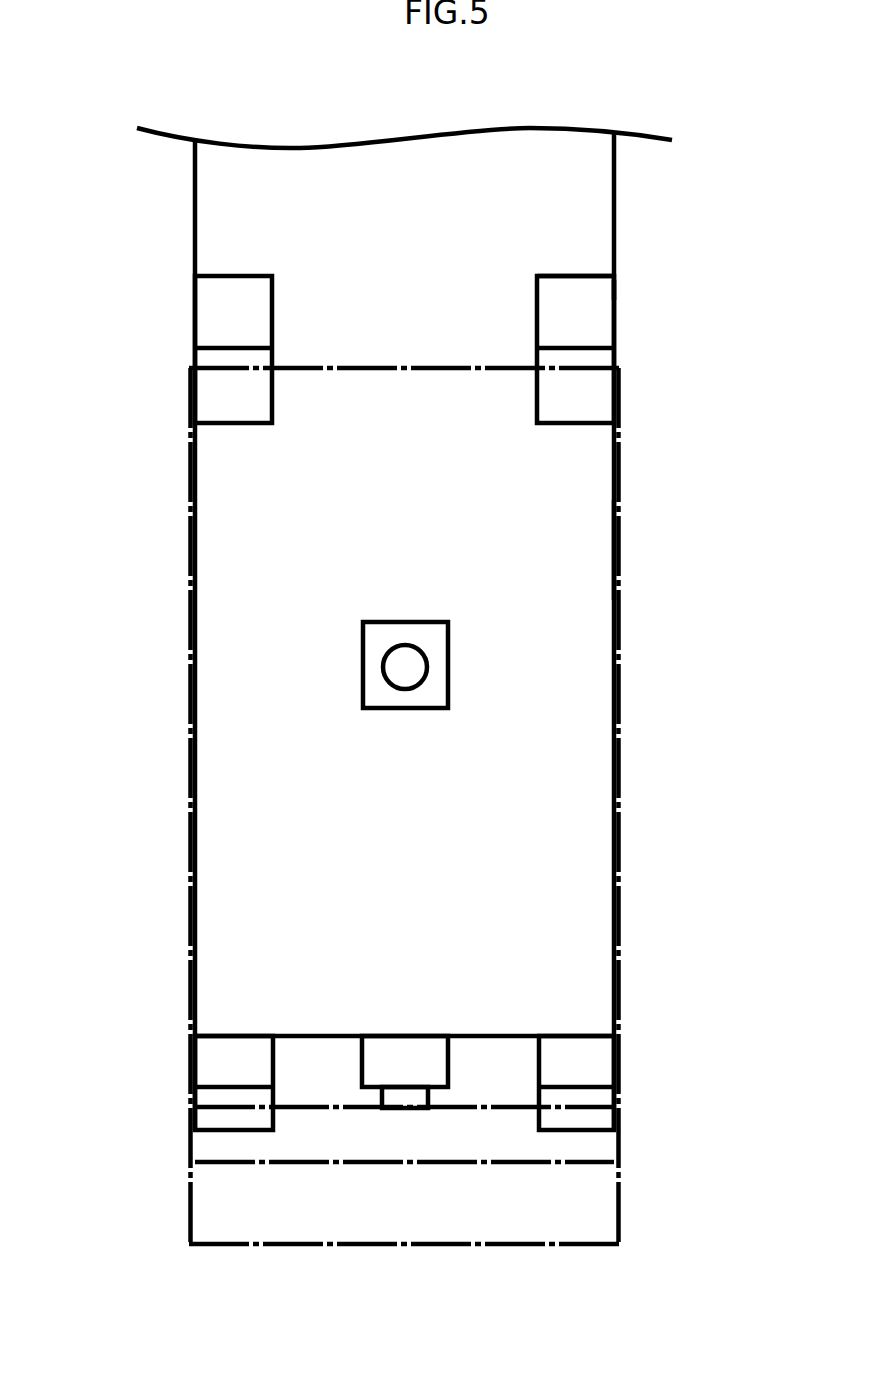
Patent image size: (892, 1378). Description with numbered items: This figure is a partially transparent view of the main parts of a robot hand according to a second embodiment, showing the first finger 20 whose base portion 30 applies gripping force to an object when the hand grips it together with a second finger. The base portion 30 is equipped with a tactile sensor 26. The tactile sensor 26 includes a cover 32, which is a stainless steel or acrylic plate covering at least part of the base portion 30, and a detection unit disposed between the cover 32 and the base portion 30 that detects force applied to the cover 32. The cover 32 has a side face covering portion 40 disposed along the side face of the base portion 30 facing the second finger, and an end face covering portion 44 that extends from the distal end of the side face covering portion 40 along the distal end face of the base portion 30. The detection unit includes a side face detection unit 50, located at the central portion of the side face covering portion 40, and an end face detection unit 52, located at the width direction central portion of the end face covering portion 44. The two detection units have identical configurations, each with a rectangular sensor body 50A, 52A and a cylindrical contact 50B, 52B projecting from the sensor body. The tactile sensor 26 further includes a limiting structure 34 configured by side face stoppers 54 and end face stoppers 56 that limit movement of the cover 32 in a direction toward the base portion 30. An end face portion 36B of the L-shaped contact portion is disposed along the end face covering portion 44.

The first finger 20 is at (574, 105).
The tactile sensor 26 is at (695, 278).
The base portion 30 is at (598, 178).
The cover 32 is at (622, 475).
The limiting structure 34 is at (588, 274).
The end face portion 36B is at (410, 1222).
The side face covering portion 40 is at (600, 545).
The end face covering portion 44 is at (463, 1140).
The side face detection unit 50 is at (563, 664).
The sensor body 50A is at (433, 643).
The contact 50B is at (410, 670).
The end face detection unit 52 is at (564, 1012).
The sensor body 52A is at (418, 1050).
The contact 52B is at (413, 1098).
The side face stoppers 54 is at (193, 318).
The end face stoppers 56 is at (193, 1065).